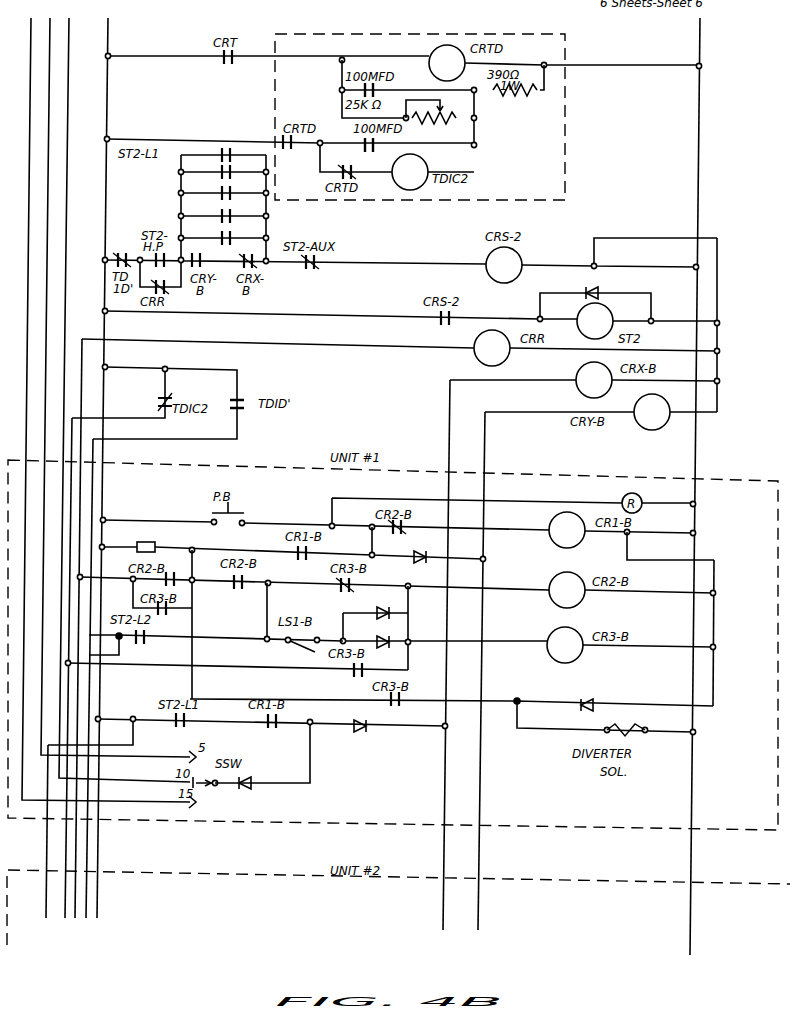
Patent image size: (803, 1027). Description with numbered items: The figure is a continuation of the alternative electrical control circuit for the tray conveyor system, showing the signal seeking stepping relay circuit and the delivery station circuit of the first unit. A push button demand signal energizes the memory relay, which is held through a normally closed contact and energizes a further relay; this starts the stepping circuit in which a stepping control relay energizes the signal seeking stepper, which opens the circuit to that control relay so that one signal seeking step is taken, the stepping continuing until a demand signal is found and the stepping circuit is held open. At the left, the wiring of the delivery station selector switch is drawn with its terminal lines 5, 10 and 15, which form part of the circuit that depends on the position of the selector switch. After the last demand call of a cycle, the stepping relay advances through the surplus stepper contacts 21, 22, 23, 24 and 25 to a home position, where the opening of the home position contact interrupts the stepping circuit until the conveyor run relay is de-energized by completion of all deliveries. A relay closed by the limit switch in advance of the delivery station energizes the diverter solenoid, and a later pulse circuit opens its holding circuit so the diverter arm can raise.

The selector switch terminal line 5 is at (118, 382).
The selector switch terminal line 10 is at (184, 395).
The selector switch terminal line 15 is at (109, 405).
The ST2-L1 surplus contact 21 is at (238, 151).
The ST2-L1 surplus contact 22 is at (238, 169).
The ST2-L1 surplus contact 23 is at (238, 190).
The ST2-L1 surplus contact 24 is at (238, 213).
The ST2-L1 surplus contact 25 is at (238, 235).